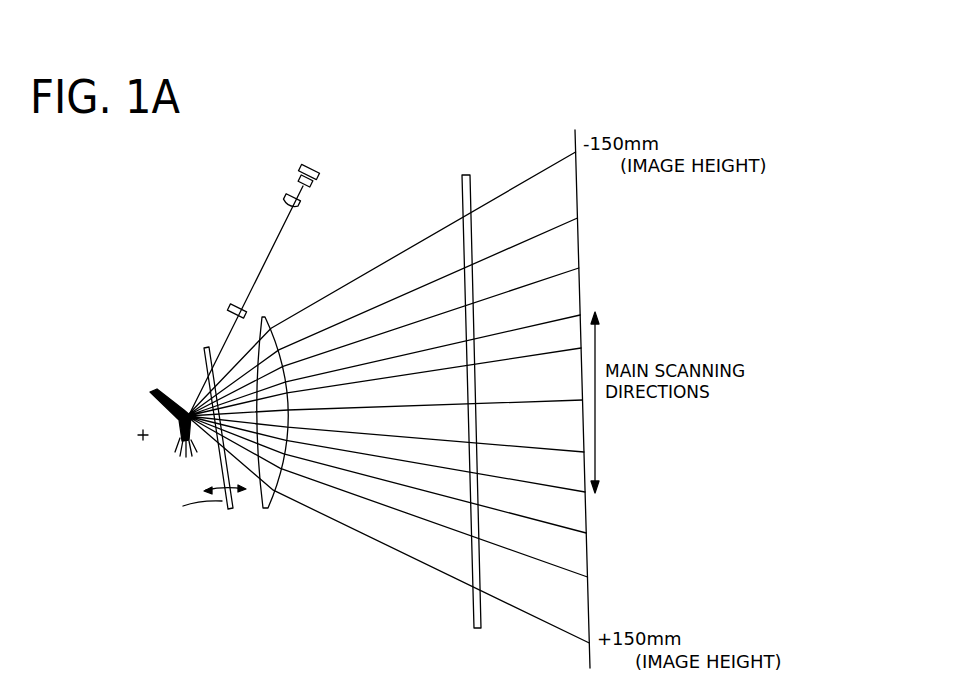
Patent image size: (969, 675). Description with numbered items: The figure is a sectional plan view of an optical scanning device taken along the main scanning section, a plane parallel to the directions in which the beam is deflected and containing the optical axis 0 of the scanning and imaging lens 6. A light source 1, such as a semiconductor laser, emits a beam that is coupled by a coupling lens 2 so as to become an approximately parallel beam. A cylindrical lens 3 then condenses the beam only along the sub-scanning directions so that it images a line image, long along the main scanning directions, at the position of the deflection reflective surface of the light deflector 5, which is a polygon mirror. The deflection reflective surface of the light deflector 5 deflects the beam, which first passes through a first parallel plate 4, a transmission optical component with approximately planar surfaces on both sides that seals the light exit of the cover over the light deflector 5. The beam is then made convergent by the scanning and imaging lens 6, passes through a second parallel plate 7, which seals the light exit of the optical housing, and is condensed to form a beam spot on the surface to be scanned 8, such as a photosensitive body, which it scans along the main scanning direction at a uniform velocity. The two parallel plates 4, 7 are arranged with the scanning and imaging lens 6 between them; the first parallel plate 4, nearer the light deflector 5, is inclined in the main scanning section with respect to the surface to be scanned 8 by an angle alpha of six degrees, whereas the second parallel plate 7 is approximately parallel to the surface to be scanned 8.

The light source 1 is at (292, 165).
The coupling lens 2 is at (283, 198).
The cylindrical lens 3 is at (233, 302).
The first parallel plate 4 is at (229, 511).
The light deflector 5 is at (191, 444).
The scanning and imaging lens 6 is at (265, 511).
The second parallel plate 7 is at (469, 612).
The surface to be scanned 8 is at (586, 654).
The optical axis 0 is at (509, 403).